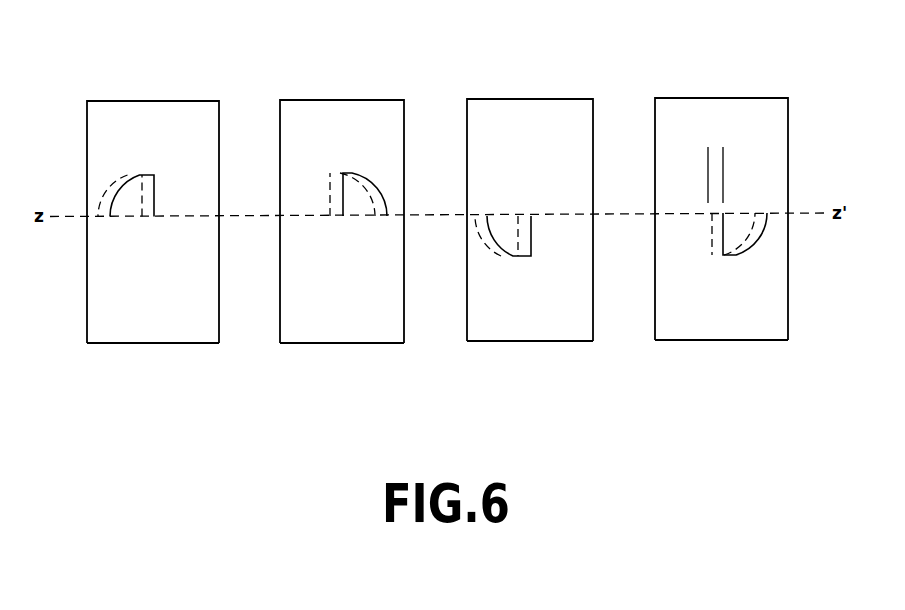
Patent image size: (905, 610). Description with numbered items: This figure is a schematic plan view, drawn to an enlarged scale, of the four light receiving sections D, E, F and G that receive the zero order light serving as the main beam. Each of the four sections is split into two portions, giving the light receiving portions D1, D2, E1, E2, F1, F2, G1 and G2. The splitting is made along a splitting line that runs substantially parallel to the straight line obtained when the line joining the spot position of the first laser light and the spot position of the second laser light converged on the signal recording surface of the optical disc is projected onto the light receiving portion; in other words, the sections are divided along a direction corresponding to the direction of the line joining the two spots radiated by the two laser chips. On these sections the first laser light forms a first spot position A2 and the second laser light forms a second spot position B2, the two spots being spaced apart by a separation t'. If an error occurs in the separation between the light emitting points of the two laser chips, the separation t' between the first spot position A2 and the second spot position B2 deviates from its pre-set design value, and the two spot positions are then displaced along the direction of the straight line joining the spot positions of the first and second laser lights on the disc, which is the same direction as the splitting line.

The light receiving portion D1 is at (150, 101).
The light receiving portion D2 is at (165, 343).
The light receiving portion E1 is at (340, 100).
The light receiving portion E2 is at (355, 343).
The light receiving portion F1 is at (527, 99).
The light receiving portion F2 is at (542, 341).
The light receiving portion G1 is at (720, 98).
The light receiving portion G2 is at (733, 340).
The first spot position A2 is at (156, 190).
The second spot position B2 is at (126, 177).
The separation t' is at (716, 163).